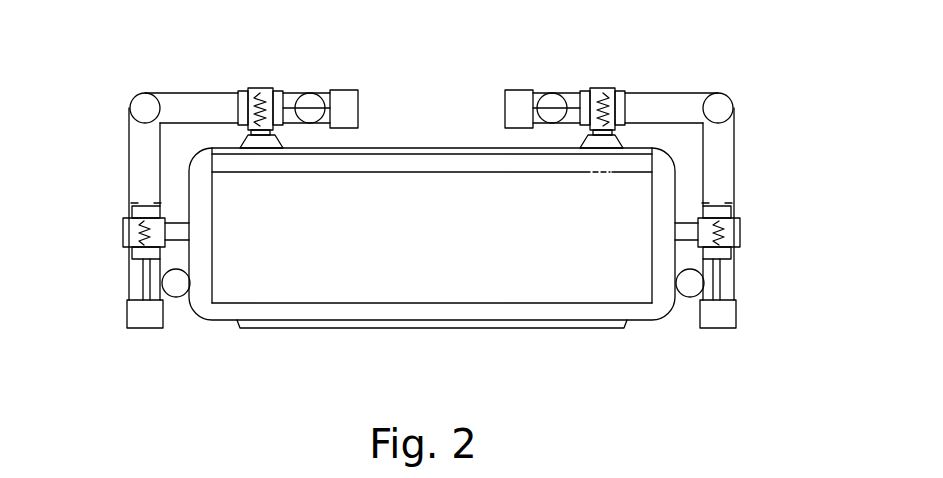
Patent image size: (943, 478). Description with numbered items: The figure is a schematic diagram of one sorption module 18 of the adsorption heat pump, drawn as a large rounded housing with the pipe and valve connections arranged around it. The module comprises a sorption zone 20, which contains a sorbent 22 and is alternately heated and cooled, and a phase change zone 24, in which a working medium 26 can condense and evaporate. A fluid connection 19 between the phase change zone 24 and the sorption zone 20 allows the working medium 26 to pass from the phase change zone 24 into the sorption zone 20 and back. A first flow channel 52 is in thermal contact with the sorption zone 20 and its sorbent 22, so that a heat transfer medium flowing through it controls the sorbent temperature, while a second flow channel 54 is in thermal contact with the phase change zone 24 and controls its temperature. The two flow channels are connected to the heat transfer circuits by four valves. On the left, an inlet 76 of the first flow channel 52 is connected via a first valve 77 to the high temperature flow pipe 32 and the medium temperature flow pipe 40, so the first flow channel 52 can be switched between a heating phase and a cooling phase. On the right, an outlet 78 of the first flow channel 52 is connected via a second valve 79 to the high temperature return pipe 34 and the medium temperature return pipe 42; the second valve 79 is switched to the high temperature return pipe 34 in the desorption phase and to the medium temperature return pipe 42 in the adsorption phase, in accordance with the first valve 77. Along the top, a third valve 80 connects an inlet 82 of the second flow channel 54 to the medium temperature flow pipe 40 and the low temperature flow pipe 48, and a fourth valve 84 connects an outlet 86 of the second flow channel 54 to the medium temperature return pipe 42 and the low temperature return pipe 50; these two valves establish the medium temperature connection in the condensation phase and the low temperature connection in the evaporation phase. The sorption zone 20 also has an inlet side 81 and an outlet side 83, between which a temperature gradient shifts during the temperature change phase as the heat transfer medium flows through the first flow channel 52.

The sorption module 18 is at (368, 334).
The fluid connection 19 is at (612, 173).
The sorption zone 20 is at (418, 248).
The sorbent 22 is at (540, 278).
The phase change zone 24 is at (495, 160).
The working medium 26 is at (420, 147).
The high temperature flow pipe 32 is at (177, 290).
The high temperature return pipe 34 is at (690, 288).
The medium temperature flow pipe 40 is at (147, 108).
The medium temperature return pipe 42 is at (716, 108).
The low temperature flow pipe 48 is at (313, 100).
The low temperature return pipe 50 is at (551, 100).
The first flow channel 52 is at (255, 191).
The second flow channel 54 is at (390, 147).
The inlet of the first flow channel 76 is at (160, 257).
The first valve 77 is at (133, 230).
The outlet of the first flow channel 78 is at (706, 256).
The second valve 79 is at (740, 232).
The third valve 80 is at (257, 92).
The inlet side of the sorption zone 81 is at (200, 280).
The inlet of the second flow channel 82 is at (243, 140).
The outlet side of the sorption zone 83 is at (662, 255).
The fourth valve 84 is at (600, 92).
The outlet of the second flow channel 86 is at (620, 142).